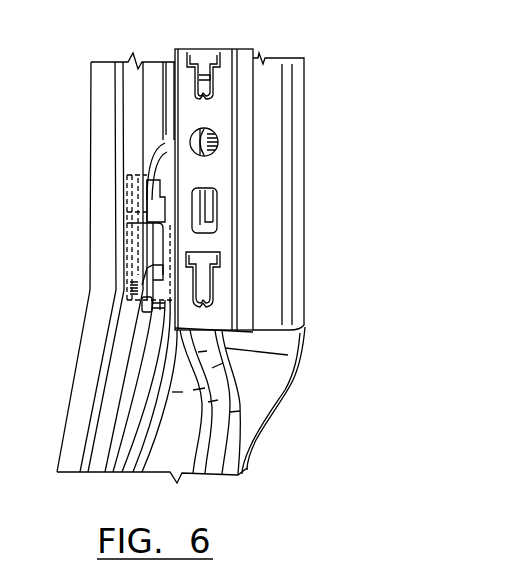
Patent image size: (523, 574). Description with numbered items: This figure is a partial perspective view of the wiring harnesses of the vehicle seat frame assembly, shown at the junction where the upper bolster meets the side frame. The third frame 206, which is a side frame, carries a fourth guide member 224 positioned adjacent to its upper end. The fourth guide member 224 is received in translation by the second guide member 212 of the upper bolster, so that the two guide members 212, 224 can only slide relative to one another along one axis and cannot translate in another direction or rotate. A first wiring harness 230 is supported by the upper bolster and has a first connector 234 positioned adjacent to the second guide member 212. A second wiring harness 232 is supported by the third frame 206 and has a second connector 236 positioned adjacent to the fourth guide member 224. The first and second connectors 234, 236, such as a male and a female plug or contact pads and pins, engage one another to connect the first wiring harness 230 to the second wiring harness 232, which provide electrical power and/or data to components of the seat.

The third frame 206 is at (95, 340).
The second guide member 212 is at (232, 75).
The fourth guide member 224 is at (275, 143).
The first wiring harness 230 is at (157, 150).
The second wiring harness 232 is at (157, 370).
The first connector 234 is at (157, 205).
The second connector 236 is at (155, 237).